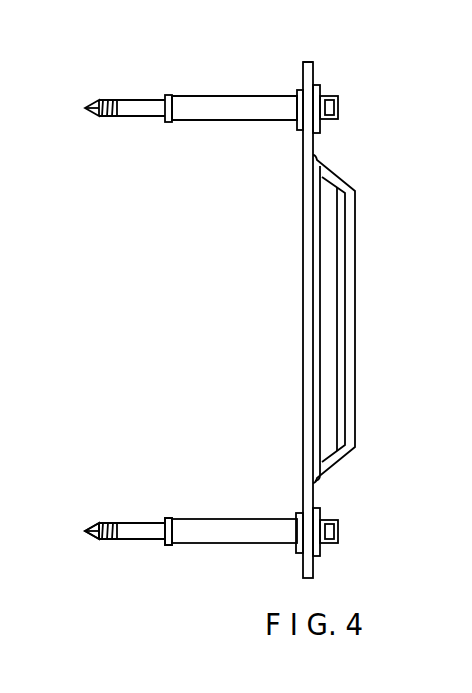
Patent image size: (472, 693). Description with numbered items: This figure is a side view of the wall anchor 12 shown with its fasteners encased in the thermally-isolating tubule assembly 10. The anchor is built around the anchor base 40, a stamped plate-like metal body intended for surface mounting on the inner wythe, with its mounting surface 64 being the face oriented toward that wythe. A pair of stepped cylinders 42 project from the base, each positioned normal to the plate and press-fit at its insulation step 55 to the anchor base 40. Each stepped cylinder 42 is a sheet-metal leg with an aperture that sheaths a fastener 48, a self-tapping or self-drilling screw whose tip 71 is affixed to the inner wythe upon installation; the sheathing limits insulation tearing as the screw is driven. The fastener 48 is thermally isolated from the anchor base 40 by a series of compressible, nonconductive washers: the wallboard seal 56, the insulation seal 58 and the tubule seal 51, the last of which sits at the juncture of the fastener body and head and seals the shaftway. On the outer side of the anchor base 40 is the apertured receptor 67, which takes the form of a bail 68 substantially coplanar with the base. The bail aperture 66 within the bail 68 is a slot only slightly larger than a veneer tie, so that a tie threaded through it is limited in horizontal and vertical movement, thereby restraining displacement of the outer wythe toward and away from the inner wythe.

The tubule assembly 10 is at (197, 69).
The wall anchor 12 is at (373, 326).
The anchor base 40 is at (313, 567).
The stepped cylinder 42 is at (217, 121).
The fastener 48 is at (338, 108).
The tubule seal 51 is at (318, 88).
The insulation step 55 is at (233, 96).
The wallboard seal 56 is at (168, 520).
The insulation seal 58 is at (300, 552).
The mounting surface 64 is at (302, 142).
The bail aperture 66 is at (327, 347).
The apertured receptor 67 is at (323, 465).
The bail 68 is at (355, 320).
The self-drilling tip 71 is at (97, 528).